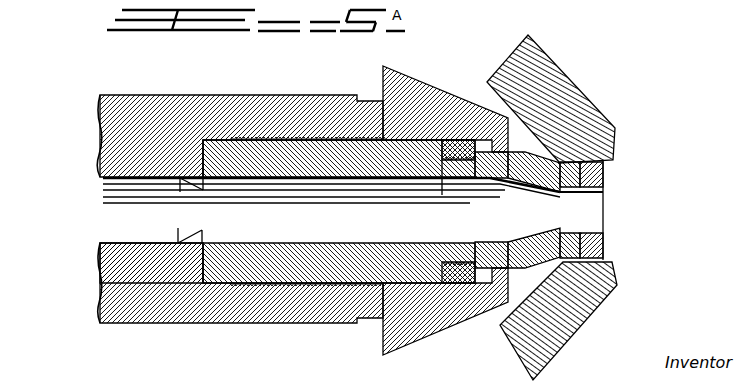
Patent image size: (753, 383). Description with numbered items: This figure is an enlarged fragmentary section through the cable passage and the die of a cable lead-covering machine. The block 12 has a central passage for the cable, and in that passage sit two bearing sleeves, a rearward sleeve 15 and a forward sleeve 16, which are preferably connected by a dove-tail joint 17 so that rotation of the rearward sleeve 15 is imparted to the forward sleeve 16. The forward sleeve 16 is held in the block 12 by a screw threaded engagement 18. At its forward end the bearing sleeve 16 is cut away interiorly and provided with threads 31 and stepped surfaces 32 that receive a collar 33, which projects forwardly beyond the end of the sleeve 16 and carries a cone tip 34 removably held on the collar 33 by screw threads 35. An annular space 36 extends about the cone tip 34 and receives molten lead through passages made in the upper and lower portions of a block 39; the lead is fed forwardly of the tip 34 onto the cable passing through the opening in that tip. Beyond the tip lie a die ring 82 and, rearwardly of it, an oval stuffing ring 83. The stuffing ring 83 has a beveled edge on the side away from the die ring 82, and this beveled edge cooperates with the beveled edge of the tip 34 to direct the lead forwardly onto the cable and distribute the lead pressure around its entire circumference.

The block 12 is at (224, 315).
The rearward bearing sleeve 15 is at (100, 256).
The forward bearing sleeve 16 is at (353, 258).
The dove-tail joint 17 is at (137, 213).
The screw threaded engagement 18 is at (318, 292).
The threads 31 is at (442, 195).
The stepped surfaces 32 is at (486, 283).
The collar 33 is at (470, 158).
The cone tip 34 is at (546, 187).
The screw threads 35 is at (510, 190).
The annular space 36 is at (526, 132).
The block 39 is at (592, 326).
The die ring 82 is at (604, 181).
The oval stuffing ring 83 is at (604, 232).